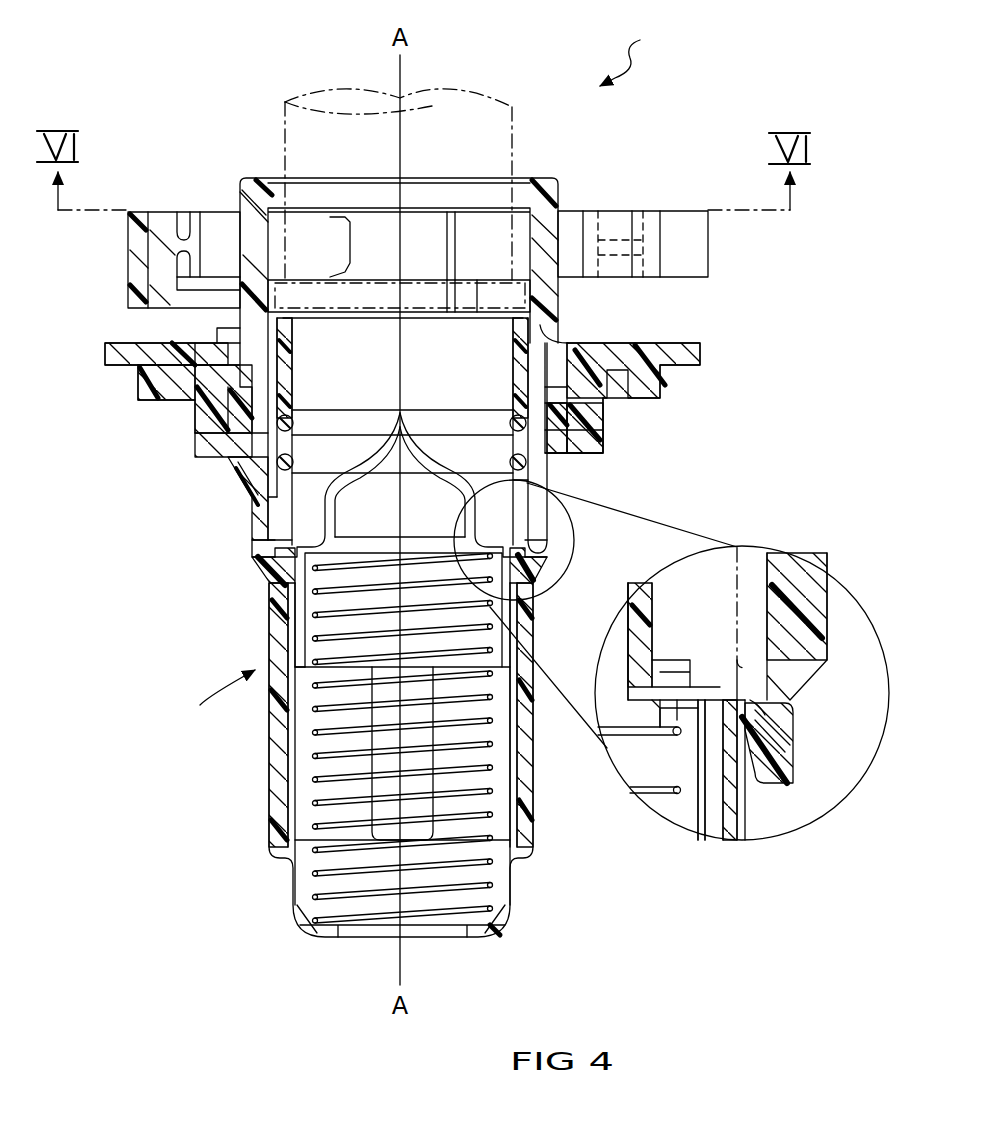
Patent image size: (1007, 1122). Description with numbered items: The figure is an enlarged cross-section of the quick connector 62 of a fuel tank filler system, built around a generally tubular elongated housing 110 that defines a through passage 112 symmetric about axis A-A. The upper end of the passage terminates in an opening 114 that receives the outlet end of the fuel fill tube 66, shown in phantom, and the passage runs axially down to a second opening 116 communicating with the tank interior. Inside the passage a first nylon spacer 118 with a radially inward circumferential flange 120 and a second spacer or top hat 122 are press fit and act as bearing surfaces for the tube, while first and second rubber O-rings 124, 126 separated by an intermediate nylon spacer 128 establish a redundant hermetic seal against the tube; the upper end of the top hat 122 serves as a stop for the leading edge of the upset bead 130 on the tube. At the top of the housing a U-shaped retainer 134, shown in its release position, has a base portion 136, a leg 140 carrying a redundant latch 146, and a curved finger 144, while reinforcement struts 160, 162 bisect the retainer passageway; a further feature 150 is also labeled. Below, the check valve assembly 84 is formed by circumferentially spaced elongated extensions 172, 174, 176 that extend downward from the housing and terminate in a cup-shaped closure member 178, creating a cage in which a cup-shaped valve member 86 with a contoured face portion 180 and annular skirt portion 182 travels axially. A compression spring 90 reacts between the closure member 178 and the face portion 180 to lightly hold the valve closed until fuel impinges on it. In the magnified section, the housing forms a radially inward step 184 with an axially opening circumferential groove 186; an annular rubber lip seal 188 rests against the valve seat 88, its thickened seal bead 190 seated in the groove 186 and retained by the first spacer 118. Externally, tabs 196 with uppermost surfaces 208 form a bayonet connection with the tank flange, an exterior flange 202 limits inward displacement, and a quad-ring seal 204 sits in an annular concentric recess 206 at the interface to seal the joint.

The quick connector 62 is at (637, 50).
The fuel fill tube 66 is at (435, 85).
The check valve assembly 84 is at (209, 693).
The valve member 86 is at (640, 700).
The valve seat 88 is at (650, 640).
The compression spring 90 is at (655, 792).
The housing 110 is at (258, 537).
The through passage 112 is at (265, 215).
The opening 114 is at (545, 225).
The second opening 116 is at (290, 590).
The first nylon spacer 118 is at (275, 490).
The circumferential flange 120 is at (262, 510).
The top hat 122 is at (520, 360).
The first O-ring 124 is at (295, 420).
The second O-ring 126 is at (565, 457).
The intermediate nylon spacer 128 is at (567, 432).
The upset bead 130 is at (520, 297).
The retainer 134 is at (168, 220).
The base portion 136 is at (135, 265).
The leg 140 is at (418, 235).
The curved finger 144 is at (333, 240).
The redundant latch 146 is at (615, 222).
The flange end 150 is at (695, 232).
The reinforcement strut 160 is at (240, 215).
The reinforcement strut 162 is at (547, 228).
The elongated extension 172 is at (280, 782).
The elongated extension 174 is at (375, 738).
The elongated extension 176 is at (530, 810).
The cup-shaped closure member 178 is at (330, 932).
The face portion 180 is at (528, 483).
The annular skirt portion 182 is at (288, 612).
The step 184 is at (790, 745).
The circumferential groove 186 is at (790, 722).
The lip seal 188 is at (700, 722).
The seal bead 190 is at (795, 700).
The tabs 196 is at (242, 462).
The exterior flange 202 is at (222, 328).
The quad-ring seal 204 is at (695, 362).
The annular concentric recess 206 is at (567, 392).
The uppermost surfaces 208 is at (195, 437).